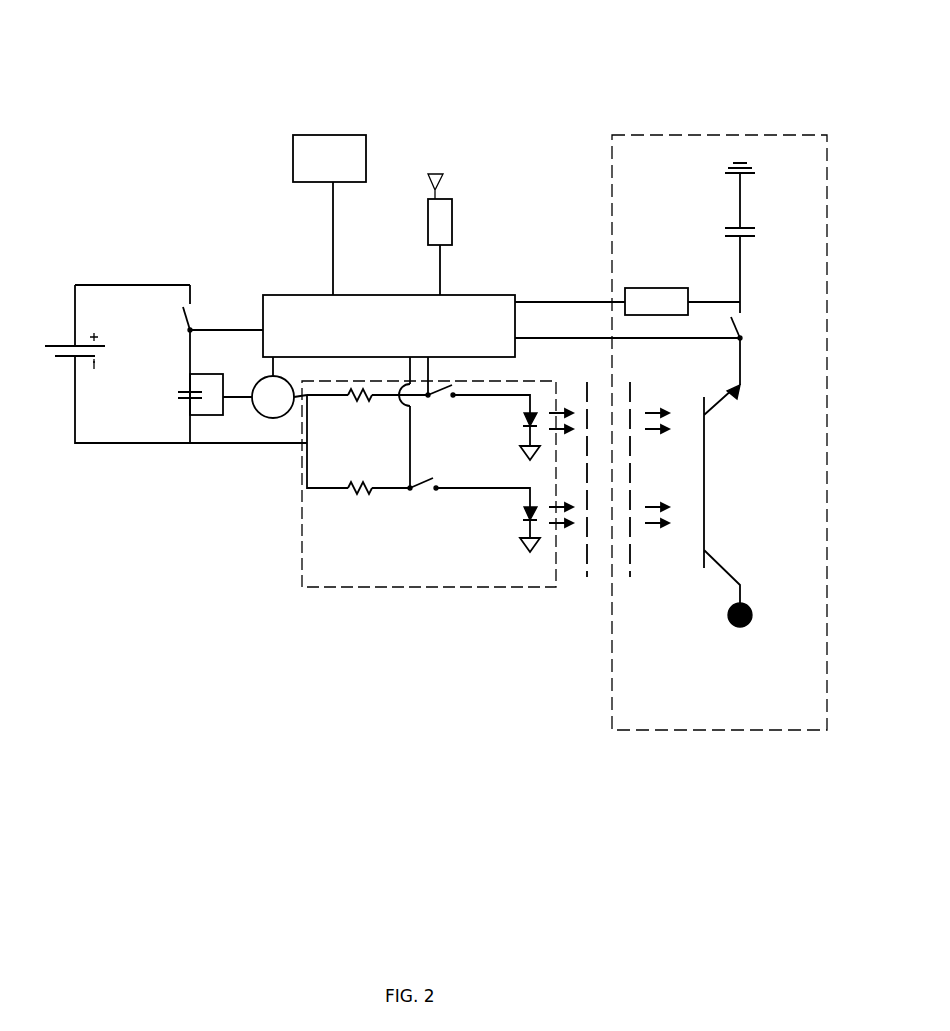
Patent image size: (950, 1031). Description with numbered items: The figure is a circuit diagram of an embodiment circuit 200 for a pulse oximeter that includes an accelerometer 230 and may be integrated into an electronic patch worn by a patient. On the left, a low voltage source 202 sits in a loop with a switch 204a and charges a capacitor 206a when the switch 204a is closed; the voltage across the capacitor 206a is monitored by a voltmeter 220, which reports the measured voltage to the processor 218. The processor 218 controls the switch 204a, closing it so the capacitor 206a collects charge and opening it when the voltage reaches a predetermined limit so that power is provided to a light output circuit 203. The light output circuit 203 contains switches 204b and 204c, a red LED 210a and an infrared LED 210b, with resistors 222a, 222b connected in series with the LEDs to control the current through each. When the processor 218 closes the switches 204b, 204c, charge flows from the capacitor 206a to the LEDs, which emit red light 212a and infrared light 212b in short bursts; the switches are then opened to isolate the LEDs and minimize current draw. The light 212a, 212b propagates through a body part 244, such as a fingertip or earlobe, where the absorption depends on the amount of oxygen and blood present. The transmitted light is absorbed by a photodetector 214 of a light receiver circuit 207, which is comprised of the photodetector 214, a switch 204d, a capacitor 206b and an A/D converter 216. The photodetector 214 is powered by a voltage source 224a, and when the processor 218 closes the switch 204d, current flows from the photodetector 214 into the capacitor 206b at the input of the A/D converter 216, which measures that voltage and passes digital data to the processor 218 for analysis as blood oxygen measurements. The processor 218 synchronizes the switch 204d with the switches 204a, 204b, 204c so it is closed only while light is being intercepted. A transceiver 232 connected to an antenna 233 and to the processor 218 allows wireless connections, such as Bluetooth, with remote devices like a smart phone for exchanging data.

The circuit 200 is at (599, 50).
The low voltage source 202 is at (50, 344).
The light output circuit 203 is at (377, 587).
The switch 204a is at (190, 306).
The switch 204b is at (433, 480).
The switch 204c is at (453, 388).
The switch 204d is at (737, 315).
The capacitor 206a is at (187, 399).
The capacitor 206b is at (748, 224).
The light receiver circuit 207 is at (740, 135).
The red LED 210a is at (523, 418).
The infrared LED 210b is at (523, 515).
The red light 212a is at (549, 413).
The infrared light 212b is at (572, 525).
The photodetector 214 is at (704, 477).
The A/D converter 216 is at (656, 301).
The processor 218 is at (389, 326).
The voltmeter 220 is at (294, 383).
The resistor 222a is at (373, 398).
The resistor 222b is at (352, 490).
The voltage source 224a is at (748, 627).
The accelerometer 230 is at (329, 158).
The transceiver 232 is at (452, 217).
The antenna 233 is at (428, 173).
The body part 244 is at (609, 565).